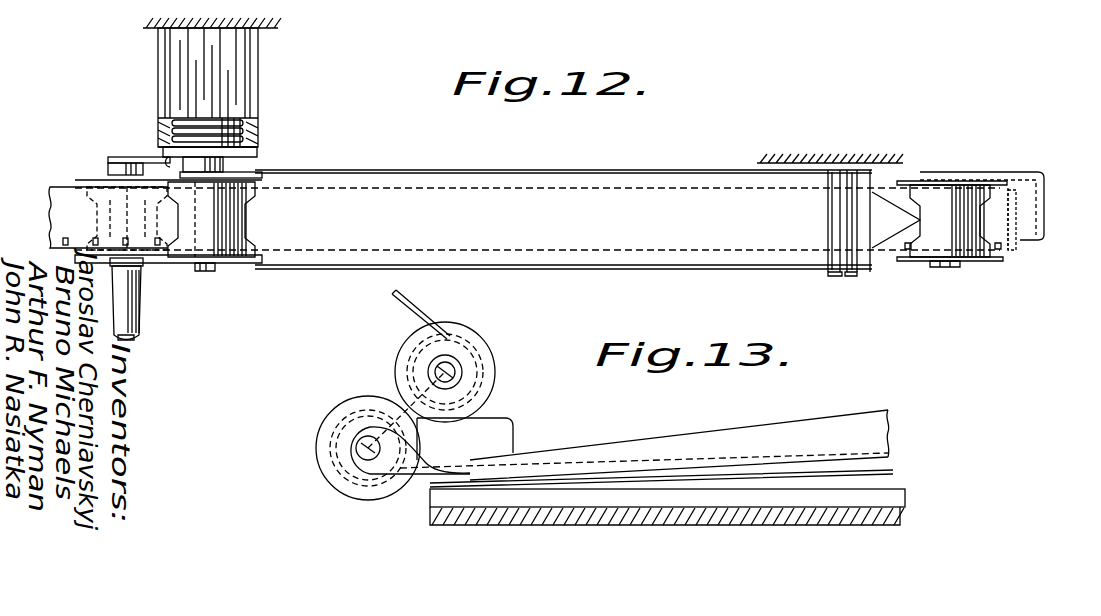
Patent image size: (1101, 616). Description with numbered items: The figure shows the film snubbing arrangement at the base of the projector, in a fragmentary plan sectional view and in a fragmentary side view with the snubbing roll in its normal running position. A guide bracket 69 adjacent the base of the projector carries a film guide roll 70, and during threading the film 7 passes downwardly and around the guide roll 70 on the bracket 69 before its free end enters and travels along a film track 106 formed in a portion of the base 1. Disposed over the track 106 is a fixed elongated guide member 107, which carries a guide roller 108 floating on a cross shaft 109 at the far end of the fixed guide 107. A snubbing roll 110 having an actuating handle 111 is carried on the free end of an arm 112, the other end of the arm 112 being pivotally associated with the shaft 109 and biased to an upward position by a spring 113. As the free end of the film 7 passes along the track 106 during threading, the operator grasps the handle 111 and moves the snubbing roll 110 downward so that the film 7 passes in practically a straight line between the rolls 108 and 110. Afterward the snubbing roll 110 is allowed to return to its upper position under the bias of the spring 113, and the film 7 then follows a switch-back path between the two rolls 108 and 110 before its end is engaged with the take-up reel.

In FIG. 13, the base 1 is at (900, 521).
In FIG. 12, the film 7 is at (65, 190).
In FIG. 13, the film 7 is at (421, 307).
In FIG. 12, the guide bracket 69 is at (1028, 172).
In FIG. 12, the film guide roll 70 is at (921, 192).
In FIG. 13, the film track 106 is at (892, 496).
In FIG. 12, the fixed elongated guide member 107 is at (625, 172).
In FIG. 13, the fixed elongated guide member 107 is at (666, 441).
In FIG. 12, the guide roller 108 is at (236, 222).
In FIG. 13, the guide roller 108 is at (330, 480).
In FIG. 12, the cross shaft 109 is at (222, 178).
In FIG. 12, the snubbing roll 110 is at (97, 218).
In FIG. 13, the snubbing roll 110 is at (486, 346).
In FIG. 12, the actuating handle 111 is at (141, 318).
In FIG. 13, the actuating handle 111 is at (448, 374).
In FIG. 12, the arm 112 is at (137, 153).
In FIG. 13, the arm 112 is at (390, 395).
In FIG. 12, the spring 113 is at (240, 118).